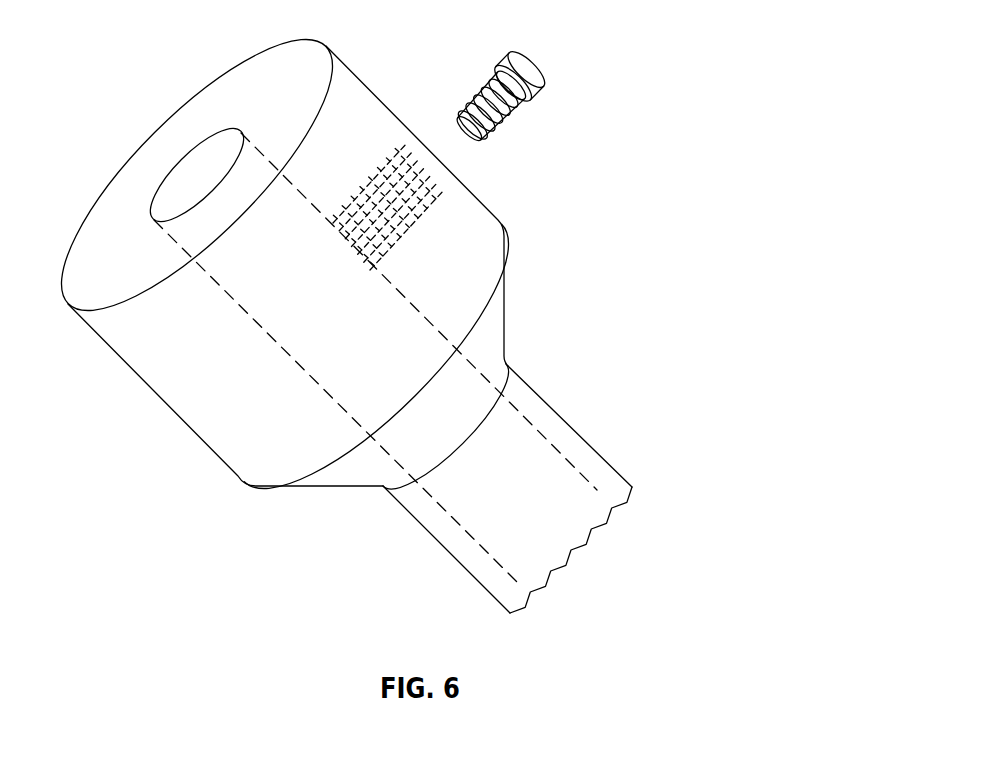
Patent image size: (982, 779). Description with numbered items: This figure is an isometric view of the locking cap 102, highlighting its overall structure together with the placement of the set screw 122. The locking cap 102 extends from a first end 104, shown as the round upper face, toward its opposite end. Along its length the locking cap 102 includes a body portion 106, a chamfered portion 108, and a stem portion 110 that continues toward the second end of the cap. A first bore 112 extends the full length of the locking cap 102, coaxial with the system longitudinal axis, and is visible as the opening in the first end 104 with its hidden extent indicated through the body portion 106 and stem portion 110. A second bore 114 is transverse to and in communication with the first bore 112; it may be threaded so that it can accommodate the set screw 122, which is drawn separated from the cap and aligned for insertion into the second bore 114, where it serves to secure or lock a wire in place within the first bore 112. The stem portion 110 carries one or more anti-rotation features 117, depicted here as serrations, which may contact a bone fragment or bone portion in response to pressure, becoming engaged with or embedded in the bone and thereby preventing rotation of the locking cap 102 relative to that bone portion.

The locking cap 102 is at (536, 82).
The first end 104 is at (258, 70).
The body portion 106 is at (200, 400).
The chamfered portion 108 is at (337, 478).
The stem portion 110 is at (590, 457).
The first bore 112 is at (180, 187).
The second bore 114 is at (423, 226).
The anti-rotation feature 117 is at (617, 500).
The set screw 122 is at (540, 98).